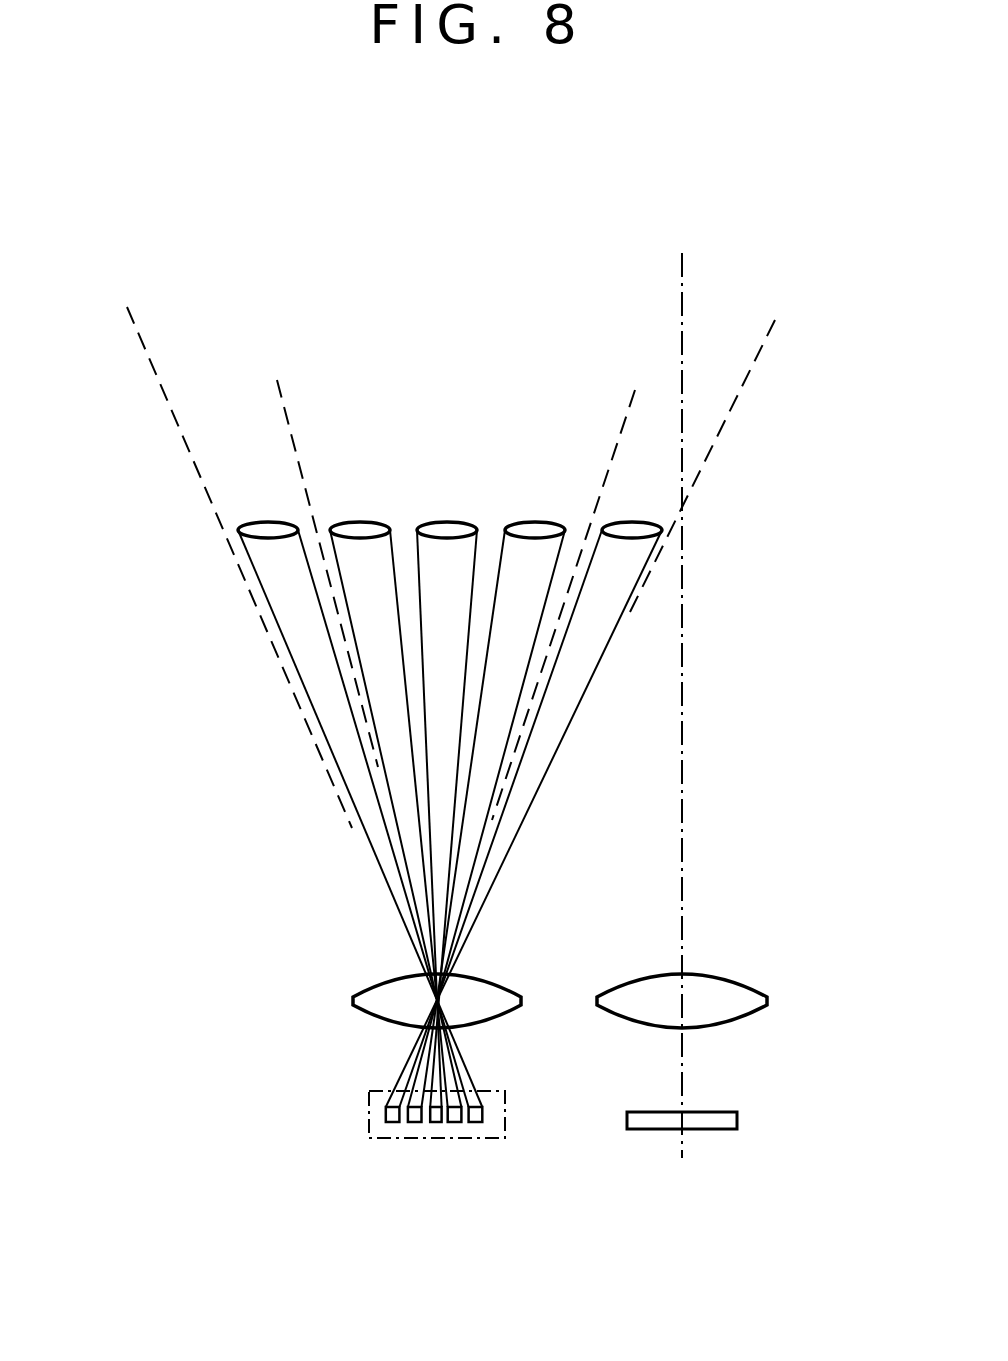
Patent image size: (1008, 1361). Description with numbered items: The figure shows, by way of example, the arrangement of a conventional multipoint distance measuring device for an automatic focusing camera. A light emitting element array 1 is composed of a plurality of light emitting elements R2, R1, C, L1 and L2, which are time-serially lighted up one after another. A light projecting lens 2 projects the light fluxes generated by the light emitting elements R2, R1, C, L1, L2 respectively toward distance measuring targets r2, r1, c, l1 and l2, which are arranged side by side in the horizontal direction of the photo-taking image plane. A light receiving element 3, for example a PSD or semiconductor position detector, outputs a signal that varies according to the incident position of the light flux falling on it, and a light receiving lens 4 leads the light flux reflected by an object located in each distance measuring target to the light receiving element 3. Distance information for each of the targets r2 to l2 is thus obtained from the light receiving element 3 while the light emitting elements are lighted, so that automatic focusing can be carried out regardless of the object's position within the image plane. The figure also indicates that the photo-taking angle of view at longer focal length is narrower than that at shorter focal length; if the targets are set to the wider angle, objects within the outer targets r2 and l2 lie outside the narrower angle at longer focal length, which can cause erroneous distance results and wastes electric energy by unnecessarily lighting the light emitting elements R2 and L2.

The light emitting element array 1 is at (421, 1156).
The light projecting lens 2 is at (360, 990).
The light receiving element 3 is at (738, 1119).
The light receiving lens 4 is at (750, 986).
The light emitting element R2 is at (388, 1116).
The light emitting element R1 is at (413, 1123).
The light emitting element C is at (433, 1123).
The light emitting element L1 is at (452, 1123).
The light emitting element L2 is at (472, 1123).
The distance measuring target c is at (450, 520).
The distance measuring target r1 is at (537, 523).
The distance measuring target r2 is at (632, 523).